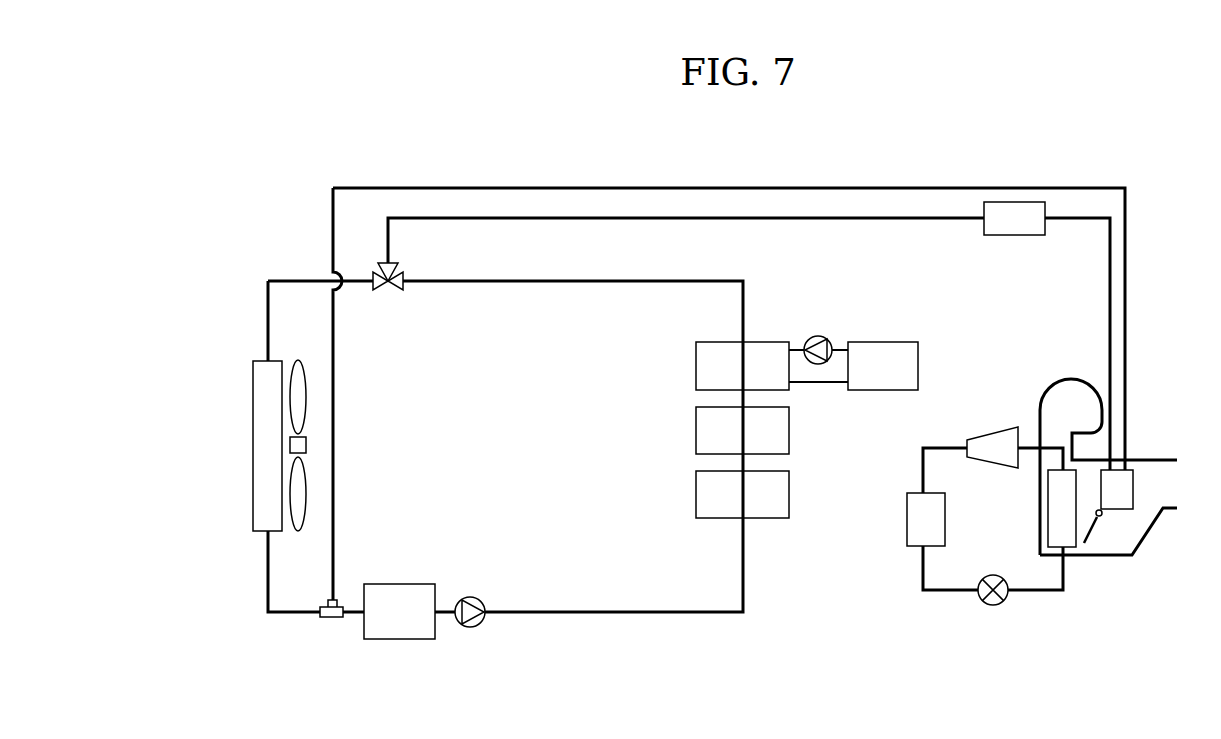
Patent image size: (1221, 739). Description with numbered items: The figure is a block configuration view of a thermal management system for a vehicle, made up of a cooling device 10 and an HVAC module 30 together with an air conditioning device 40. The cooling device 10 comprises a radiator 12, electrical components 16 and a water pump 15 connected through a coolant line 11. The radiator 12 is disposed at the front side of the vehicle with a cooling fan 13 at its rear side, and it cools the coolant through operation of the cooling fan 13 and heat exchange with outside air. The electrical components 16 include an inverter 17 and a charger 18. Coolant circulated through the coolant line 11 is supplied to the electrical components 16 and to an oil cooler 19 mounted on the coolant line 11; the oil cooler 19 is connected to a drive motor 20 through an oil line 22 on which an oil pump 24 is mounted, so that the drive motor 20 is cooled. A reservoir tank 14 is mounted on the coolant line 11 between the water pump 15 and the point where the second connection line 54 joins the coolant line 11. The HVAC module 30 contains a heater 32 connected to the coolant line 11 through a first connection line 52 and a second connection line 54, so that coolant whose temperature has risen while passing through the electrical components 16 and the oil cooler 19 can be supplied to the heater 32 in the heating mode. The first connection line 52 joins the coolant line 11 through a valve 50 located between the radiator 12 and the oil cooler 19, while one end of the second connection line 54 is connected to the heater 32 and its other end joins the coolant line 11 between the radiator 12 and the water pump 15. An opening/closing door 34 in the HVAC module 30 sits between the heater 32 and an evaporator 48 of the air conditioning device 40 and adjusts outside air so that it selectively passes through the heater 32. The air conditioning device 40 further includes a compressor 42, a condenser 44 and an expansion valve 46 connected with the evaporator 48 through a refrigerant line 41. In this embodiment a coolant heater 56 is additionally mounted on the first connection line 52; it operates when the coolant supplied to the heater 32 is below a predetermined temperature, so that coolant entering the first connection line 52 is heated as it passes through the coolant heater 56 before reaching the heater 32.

The cooling device 10 is at (272, 254).
The coolant line 11 is at (612, 615).
The radiator 12 is at (253, 447).
The cooling fan 13 is at (297, 360).
The reservoir tank 14 is at (400, 640).
The water pump 15 is at (474, 627).
The electrical components 16 is at (652, 427).
The inverter 17 is at (696, 430).
The charger 18 is at (696, 495).
The oil cooler 19 is at (696, 368).
The drive motor 20 is at (881, 342).
The oil line 22 is at (820, 385).
The oil pump 24 is at (818, 336).
The HVAC module 30 is at (1156, 556).
The heater 32 is at (1133, 490).
The opening/closing door 34 is at (1100, 528).
The air conditioning device 40 is at (936, 608).
The refrigerant line 41 is at (923, 568).
The compressor 42 is at (993, 435).
The condenser 44 is at (907, 518).
The expansion valve 46 is at (993, 606).
The evaporator 48 is at (1072, 549).
The valve 50 is at (402, 291).
The first connection line 52 is at (818, 221).
The second connection line 54 is at (818, 186).
The coolant heater 56 is at (1012, 237).